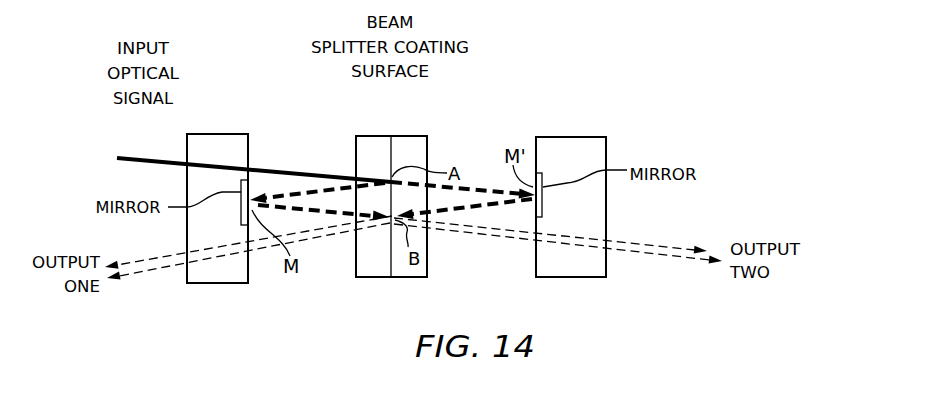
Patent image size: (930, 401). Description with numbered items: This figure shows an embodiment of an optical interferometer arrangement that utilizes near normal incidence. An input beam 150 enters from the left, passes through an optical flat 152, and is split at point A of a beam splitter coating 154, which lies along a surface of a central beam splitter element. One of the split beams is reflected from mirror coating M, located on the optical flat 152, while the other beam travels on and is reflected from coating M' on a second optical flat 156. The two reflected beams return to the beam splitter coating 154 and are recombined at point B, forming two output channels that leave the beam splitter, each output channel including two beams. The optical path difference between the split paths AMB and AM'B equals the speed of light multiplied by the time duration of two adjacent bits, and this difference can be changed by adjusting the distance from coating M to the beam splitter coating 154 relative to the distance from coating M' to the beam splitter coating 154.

The input beam 150 is at (153, 157).
The optical flat 152 is at (218, 287).
The beam splitter coating 154 is at (390, 152).
The second optical flat 156 is at (568, 137).